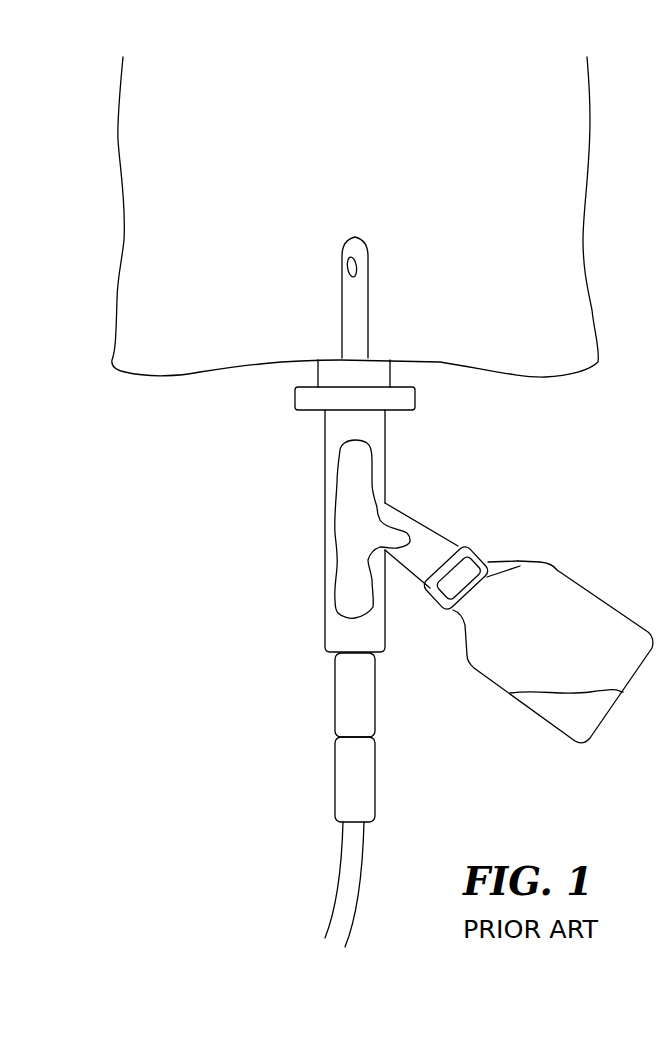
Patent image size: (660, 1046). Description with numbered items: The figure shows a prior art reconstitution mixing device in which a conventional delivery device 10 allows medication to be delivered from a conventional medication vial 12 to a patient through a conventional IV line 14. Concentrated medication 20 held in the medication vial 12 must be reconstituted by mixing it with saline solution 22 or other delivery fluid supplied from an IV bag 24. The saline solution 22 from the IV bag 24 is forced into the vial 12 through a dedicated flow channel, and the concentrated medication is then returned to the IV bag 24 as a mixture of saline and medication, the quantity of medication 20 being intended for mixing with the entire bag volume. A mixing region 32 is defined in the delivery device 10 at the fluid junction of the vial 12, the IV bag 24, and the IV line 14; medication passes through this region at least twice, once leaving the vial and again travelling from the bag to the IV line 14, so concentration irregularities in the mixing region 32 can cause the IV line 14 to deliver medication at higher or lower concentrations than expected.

The delivery device 10 is at (250, 597).
The medication vial 12 is at (607, 605).
The IV line 14 is at (338, 878).
The concentrated medication 20 is at (555, 705).
The saline solution 22 is at (496, 264).
The IV bag 24 is at (560, 377).
The mixing region 32 is at (350, 500).